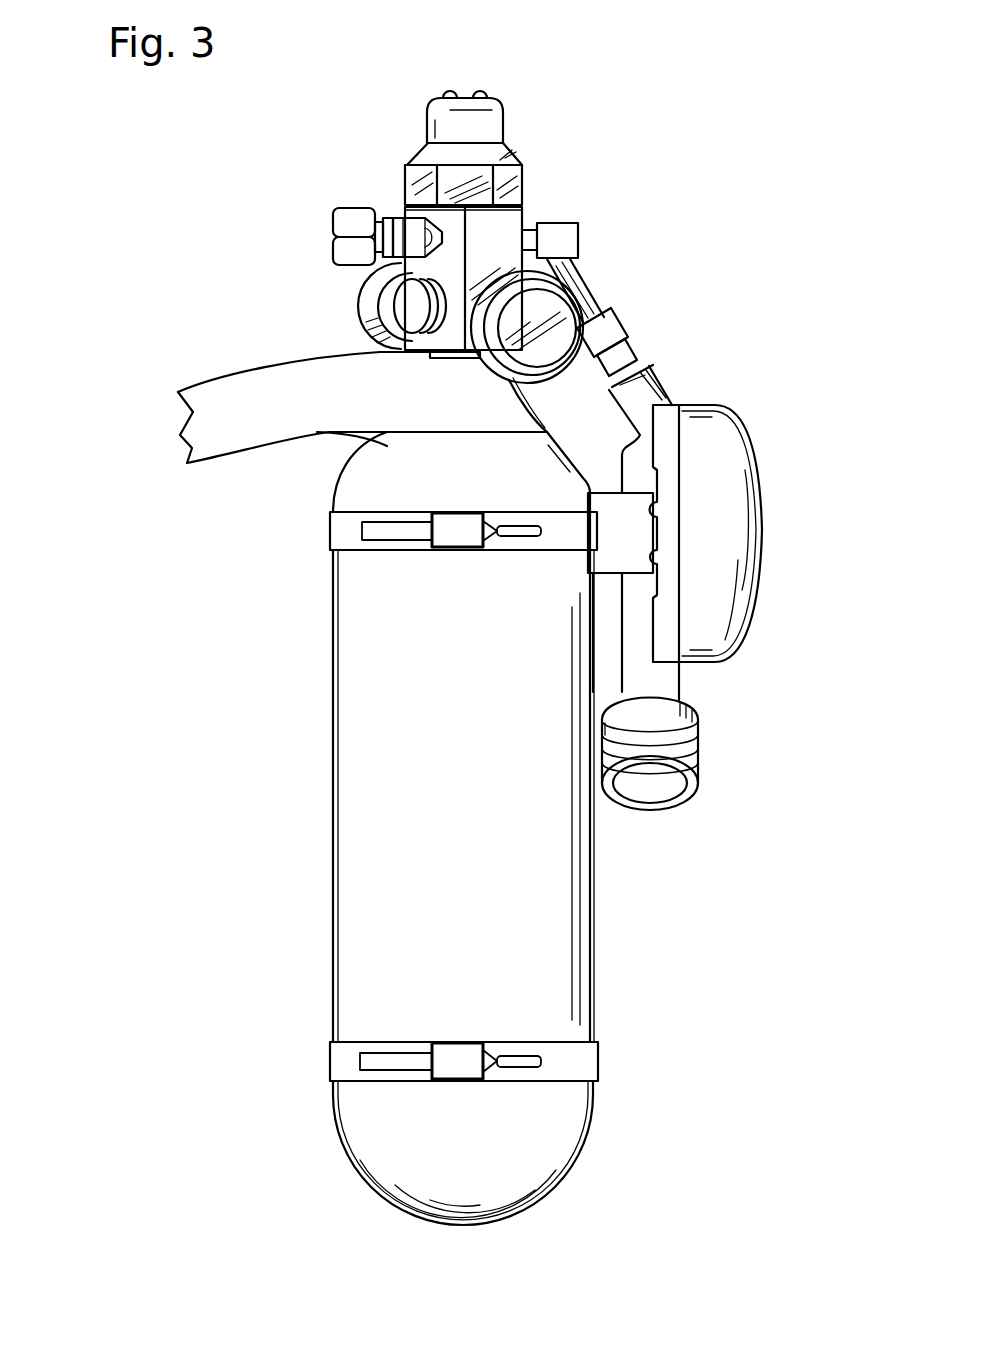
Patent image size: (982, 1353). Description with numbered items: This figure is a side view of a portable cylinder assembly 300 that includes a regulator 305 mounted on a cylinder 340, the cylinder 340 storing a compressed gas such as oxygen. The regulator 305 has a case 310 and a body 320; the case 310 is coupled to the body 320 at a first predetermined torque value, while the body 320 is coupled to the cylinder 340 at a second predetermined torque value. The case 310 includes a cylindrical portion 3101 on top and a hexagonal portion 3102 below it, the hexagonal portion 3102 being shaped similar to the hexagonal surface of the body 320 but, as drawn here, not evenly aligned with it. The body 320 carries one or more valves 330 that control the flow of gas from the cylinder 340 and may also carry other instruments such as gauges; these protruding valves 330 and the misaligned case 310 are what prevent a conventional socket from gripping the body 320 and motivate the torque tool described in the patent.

The portable cylinder assembly 300 is at (168, 537).
The regulator 305 is at (406, 291).
The case 310 is at (468, 147).
The cylindrical portion 3101 is at (480, 128).
The hexagonal portion 3102 is at (518, 190).
The body 320 is at (503, 222).
The valves 330 is at (333, 228).
The cylinder 340 is at (333, 744).